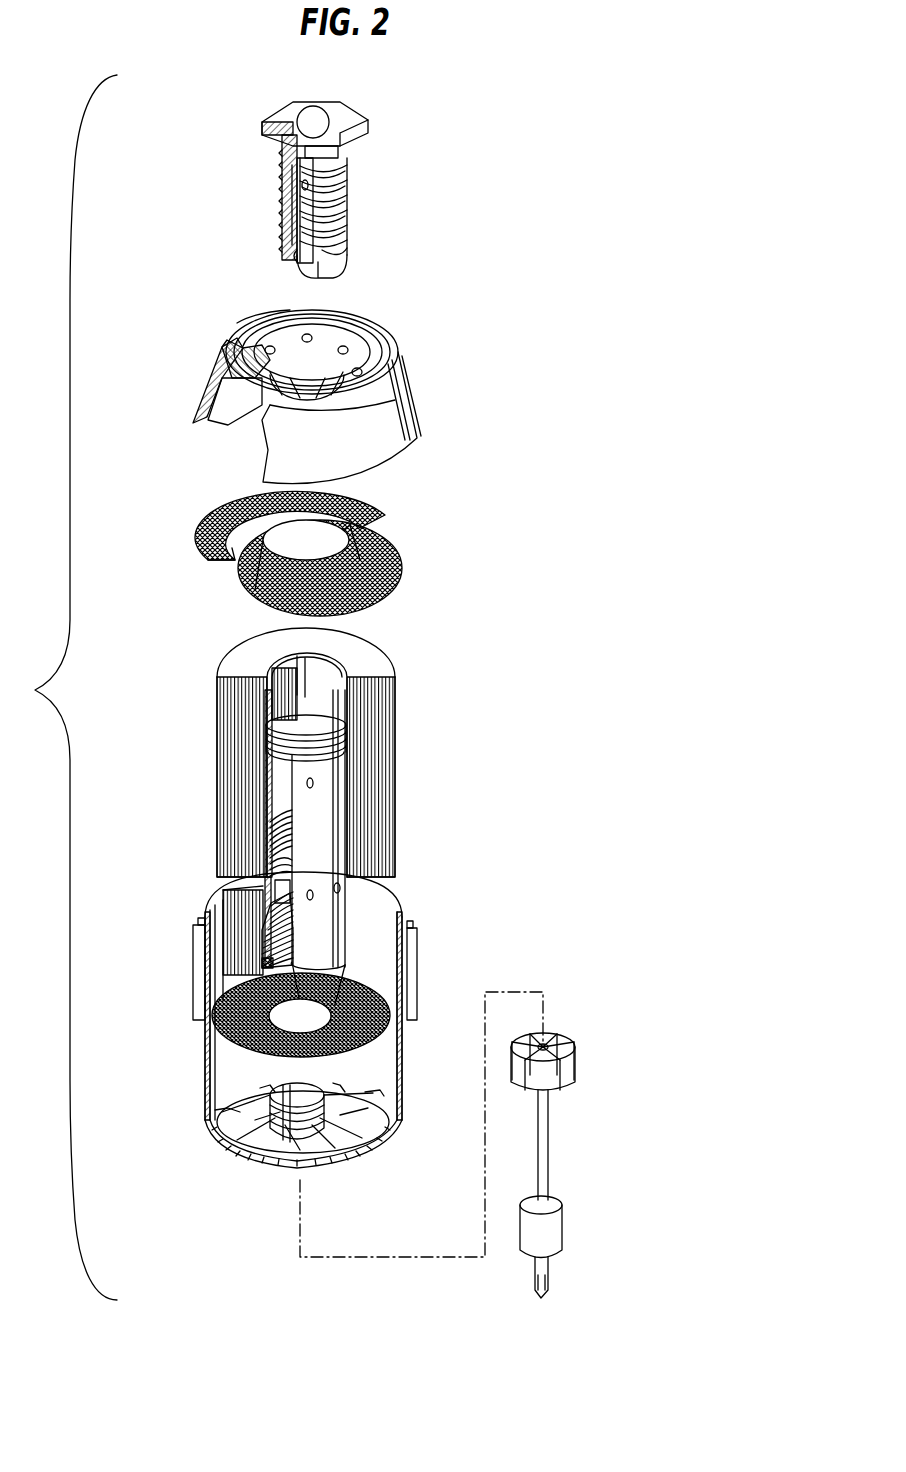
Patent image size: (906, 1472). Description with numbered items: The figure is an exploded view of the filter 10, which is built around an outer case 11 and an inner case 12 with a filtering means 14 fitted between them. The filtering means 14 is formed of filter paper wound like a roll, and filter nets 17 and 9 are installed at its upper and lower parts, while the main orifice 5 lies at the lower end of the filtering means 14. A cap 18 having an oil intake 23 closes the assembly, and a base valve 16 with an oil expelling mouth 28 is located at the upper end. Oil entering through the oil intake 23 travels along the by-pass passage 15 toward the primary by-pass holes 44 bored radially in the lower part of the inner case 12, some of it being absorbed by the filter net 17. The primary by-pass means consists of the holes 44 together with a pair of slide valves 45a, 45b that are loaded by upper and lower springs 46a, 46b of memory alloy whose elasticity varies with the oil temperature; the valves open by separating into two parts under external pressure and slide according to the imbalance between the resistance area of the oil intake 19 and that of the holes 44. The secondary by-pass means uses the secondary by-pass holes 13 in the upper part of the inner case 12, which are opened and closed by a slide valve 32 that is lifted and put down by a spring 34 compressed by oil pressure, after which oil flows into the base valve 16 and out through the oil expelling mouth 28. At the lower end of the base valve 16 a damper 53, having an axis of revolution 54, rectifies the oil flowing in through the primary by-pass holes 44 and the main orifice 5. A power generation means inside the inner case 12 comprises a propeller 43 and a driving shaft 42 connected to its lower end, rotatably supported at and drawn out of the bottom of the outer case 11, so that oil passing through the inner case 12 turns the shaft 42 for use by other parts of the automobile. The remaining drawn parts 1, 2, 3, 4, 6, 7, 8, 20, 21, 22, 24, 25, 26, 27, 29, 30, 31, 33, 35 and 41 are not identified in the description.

The housing 1 is at (331, 1067).
The bracket 2 is at (193, 1031).
The rib 3 is at (357, 1137).
The bottom wall 4 is at (220, 1122).
The main orifice 5 is at (279, 1137).
The support 6 is at (357, 1087).
The spoke plate 7 is at (377, 1107).
The bottom plate 8 is at (223, 1092).
The filter net 9 is at (212, 1040).
The filter 10 is at (293, 1022).
The outer case 11 is at (338, 806).
The inner case 12 is at (250, 930).
The secondary by-pass holes 13 is at (313, 783).
The filtering means 14 is at (238, 748).
The by-pass passage 15 is at (398, 556).
The base valve 16 is at (337, 517).
The filter net 17 is at (294, 547).
The cap 18 is at (298, 397).
The oil intake 19 is at (230, 387).
The plate 20 is at (253, 388).
The cup body 21 is at (390, 370).
The inner section 22 is at (227, 340).
The oil intake 23 is at (238, 325).
The rim 24 is at (300, 326).
The screw assembly 25 is at (341, 190).
The holes 26 is at (393, 350).
The sleeve 27 is at (262, 128).
The oil expelling mouth 28 is at (328, 113).
The column 29 is at (300, 220).
The neck 30 is at (345, 161).
The bottom end 31 is at (333, 270).
The slide valve 32 is at (310, 187).
The thread 33 is at (347, 198).
The spring 34 is at (285, 213).
The spring 35 is at (330, 718).
The magnet 41 is at (552, 1232).
The driving shaft 42 is at (548, 1265).
The propeller 43 is at (566, 1040).
The primary by-pass holes 44 is at (393, 868).
The slide valve 45a is at (276, 862).
The slide valve 45b is at (272, 882).
The spring 46a is at (277, 818).
The spring 46b is at (268, 937).
The damper 53 is at (285, 255).
The axis of revolution 54 is at (323, 257).